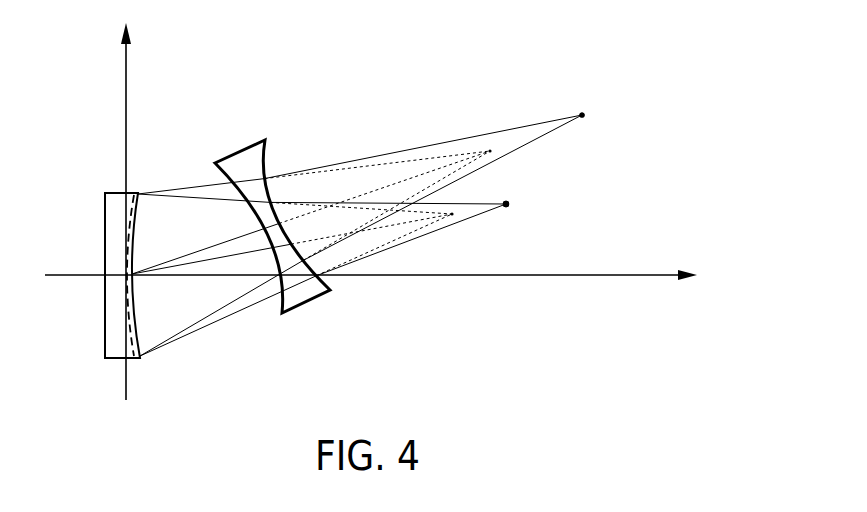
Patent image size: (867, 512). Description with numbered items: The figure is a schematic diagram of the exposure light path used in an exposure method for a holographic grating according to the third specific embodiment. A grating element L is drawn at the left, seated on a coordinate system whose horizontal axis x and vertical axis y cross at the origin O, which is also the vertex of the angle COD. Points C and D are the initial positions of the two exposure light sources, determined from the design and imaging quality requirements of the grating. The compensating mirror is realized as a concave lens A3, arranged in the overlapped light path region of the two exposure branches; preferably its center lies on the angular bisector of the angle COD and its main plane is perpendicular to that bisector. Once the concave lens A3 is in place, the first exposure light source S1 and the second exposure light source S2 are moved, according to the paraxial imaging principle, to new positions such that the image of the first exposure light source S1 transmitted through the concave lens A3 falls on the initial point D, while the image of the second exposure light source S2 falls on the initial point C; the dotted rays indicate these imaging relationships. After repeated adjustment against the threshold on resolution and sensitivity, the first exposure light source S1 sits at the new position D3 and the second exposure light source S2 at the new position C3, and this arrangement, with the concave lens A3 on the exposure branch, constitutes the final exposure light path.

The display / image source L is at (105, 240).
The concave lens A3 is at (247, 148).
The vertex of angle COD O is at (117, 288).
The x axis x is at (371, 290).
The y axis y is at (115, 211).
The first exposure light source S1 is at (597, 117).
The second exposure light source S2 is at (523, 197).
The new position of the first exposure light source D3 is at (577, 102).
The new position of the second exposure light source C3 is at (512, 218).
The initial position point of the first exposure light source D is at (500, 147).
The initial position point of the second exposure light source C is at (461, 215).